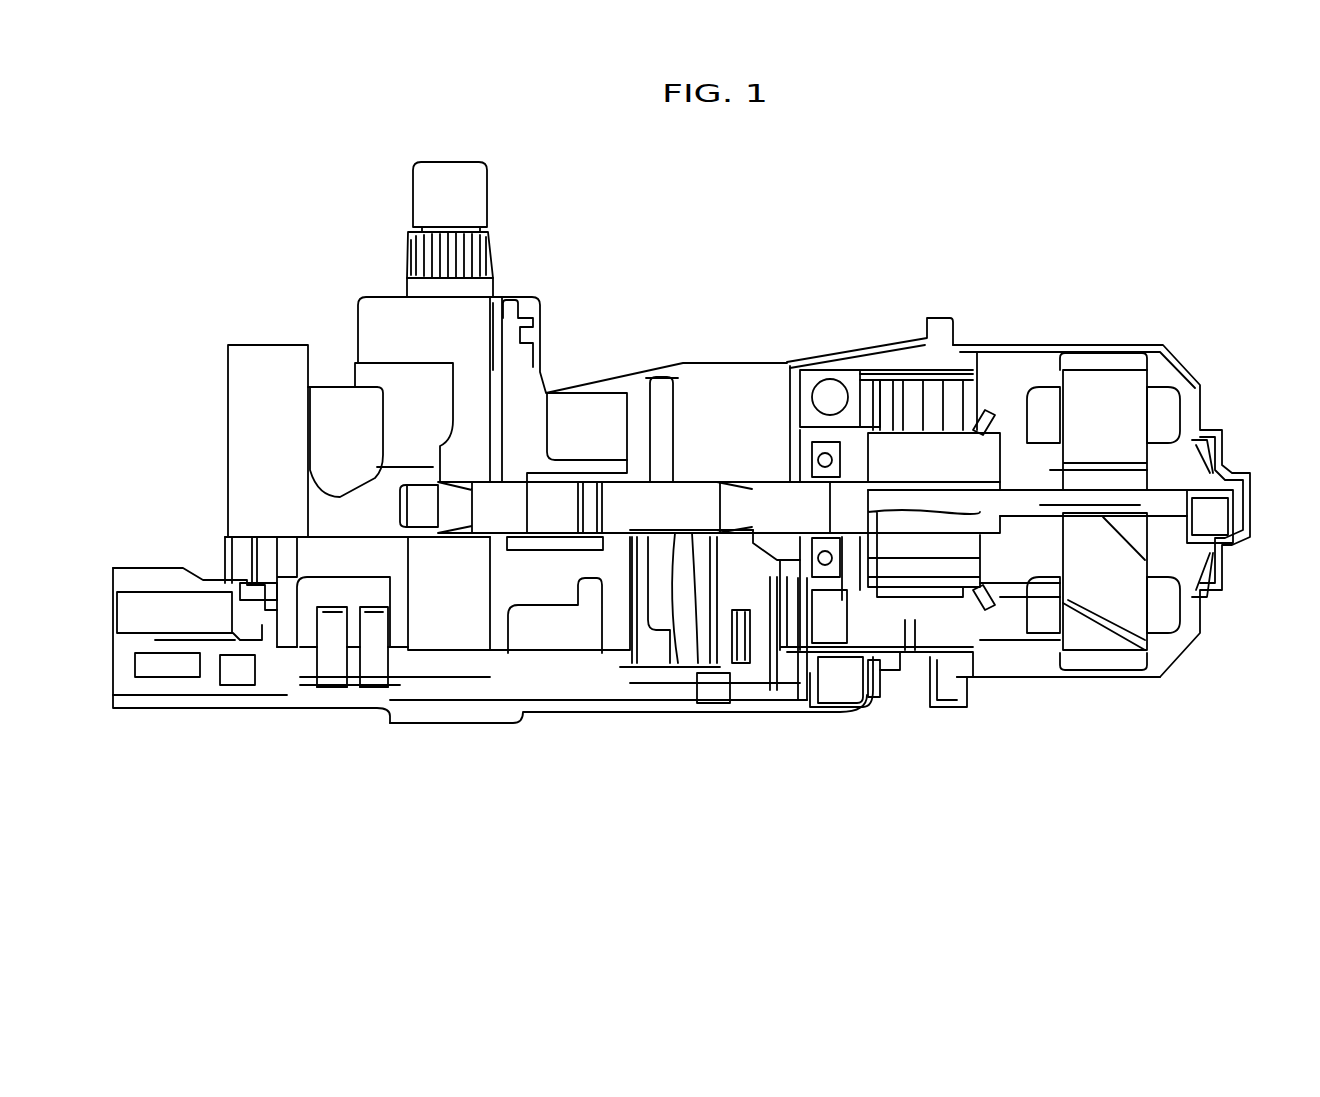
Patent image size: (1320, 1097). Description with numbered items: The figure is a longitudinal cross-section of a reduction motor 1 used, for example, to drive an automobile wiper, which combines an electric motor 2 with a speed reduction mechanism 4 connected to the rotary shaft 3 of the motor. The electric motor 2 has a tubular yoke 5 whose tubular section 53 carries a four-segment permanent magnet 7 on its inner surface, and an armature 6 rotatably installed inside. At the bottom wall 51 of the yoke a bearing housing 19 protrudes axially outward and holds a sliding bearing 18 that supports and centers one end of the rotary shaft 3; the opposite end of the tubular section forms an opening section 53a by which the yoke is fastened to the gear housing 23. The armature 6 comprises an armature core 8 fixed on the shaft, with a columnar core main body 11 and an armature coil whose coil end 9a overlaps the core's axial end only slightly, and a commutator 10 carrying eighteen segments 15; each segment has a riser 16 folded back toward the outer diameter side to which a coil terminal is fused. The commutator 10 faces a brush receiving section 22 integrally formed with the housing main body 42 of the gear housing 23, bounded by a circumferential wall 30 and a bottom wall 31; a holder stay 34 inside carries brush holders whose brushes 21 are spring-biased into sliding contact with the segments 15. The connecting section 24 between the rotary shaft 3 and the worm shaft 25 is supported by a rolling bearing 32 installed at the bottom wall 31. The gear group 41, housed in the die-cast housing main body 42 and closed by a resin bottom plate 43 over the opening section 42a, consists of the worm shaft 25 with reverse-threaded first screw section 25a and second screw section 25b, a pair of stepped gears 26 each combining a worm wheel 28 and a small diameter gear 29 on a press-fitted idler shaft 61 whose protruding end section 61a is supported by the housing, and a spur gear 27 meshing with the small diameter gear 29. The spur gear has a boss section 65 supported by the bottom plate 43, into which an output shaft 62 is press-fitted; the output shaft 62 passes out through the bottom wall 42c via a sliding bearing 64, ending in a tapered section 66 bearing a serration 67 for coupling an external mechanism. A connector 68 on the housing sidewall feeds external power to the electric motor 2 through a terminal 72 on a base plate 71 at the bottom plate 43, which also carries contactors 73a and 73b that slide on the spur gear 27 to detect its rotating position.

The reduction motor 1 is at (1186, 204).
The electric motor 2 is at (1028, 340).
The rotary shaft 3 is at (1190, 505).
The speed reduction mechanism 4 is at (722, 358).
The yoke 5 is at (1032, 680).
The armature 6 is at (1190, 402).
The permanent magnet 7 is at (1105, 360).
The armature core 8 is at (1113, 405).
The coil end 9a is at (1170, 410).
The commutator 10 is at (933, 597).
The core main body 11 is at (1150, 477).
The segments 15 is at (962, 420).
The riser 16 is at (983, 413).
The sliding bearing 18 is at (1235, 478).
The bearing housing 19 is at (1240, 550).
The brushes 21 is at (905, 625).
The brush receiving section 22 is at (889, 345).
The gear housing 23 is at (634, 360).
The connecting section 24 is at (793, 500).
The worm shaft 25 is at (700, 470).
The first screw section 25a is at (680, 665).
The second screw section 25b is at (530, 533).
The stepped gear 26 is at (647, 640).
The spur gear 27 is at (365, 592).
The worm wheel 28 is at (595, 482).
The small diameter gear 29 is at (722, 578).
The circumferential wall 30 is at (895, 660).
The bottom wall 31 is at (823, 600).
The rolling bearing 32 is at (825, 453).
The holder stay 34 is at (954, 400).
The gear group 41 is at (563, 627).
The housing main body 42 is at (228, 405).
The opening section 42a is at (775, 620).
The bottom wall 42c is at (340, 385).
The bottom plate 43 is at (483, 722).
The bottom wall 51 is at (1230, 570).
The tubular section 53 is at (1085, 680).
The opening section 53a is at (925, 645).
The idler shaft 61 is at (650, 437).
The protruding end section 61a is at (665, 375).
The output shaft 62 is at (427, 567).
The sliding bearing 64 is at (522, 345).
The boss section 65 is at (420, 660).
The tapered section 66 is at (410, 250).
The serration 67 is at (487, 252).
The connector 68 is at (157, 710).
The base plate 71 is at (305, 640).
The terminal 72 is at (203, 638).
The contactor 73a is at (320, 630).
The contactor 73b is at (372, 648).